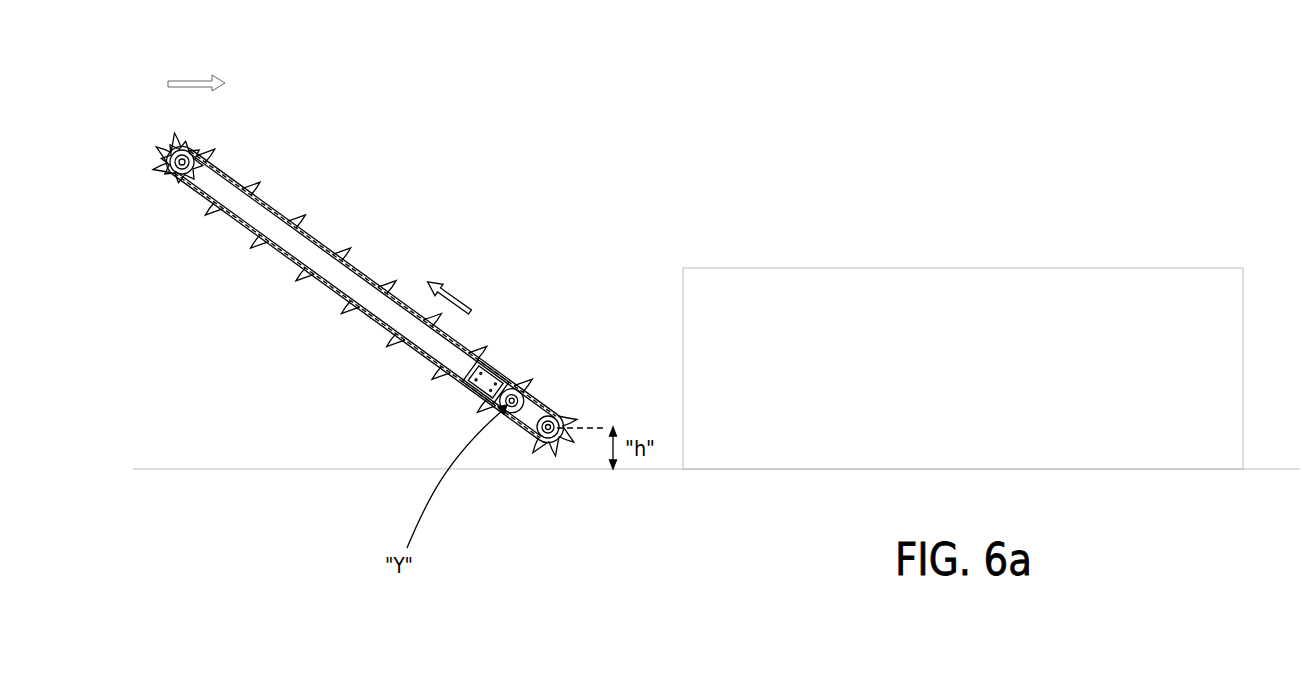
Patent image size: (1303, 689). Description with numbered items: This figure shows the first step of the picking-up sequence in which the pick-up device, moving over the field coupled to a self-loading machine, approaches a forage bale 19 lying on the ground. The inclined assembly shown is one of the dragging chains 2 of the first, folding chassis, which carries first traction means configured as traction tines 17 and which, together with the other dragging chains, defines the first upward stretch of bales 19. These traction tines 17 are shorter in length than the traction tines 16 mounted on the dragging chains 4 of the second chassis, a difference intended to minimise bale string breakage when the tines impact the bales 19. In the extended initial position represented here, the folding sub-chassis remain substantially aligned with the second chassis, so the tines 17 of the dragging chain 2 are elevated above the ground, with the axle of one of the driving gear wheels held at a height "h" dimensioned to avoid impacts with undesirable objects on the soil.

The dragging chain 2 is at (380, 309).
The dragging chain 4 is at (287, 253).
The traction tine 16 is at (290, 216).
The traction tine 17 is at (565, 415).
The bale 19 is at (1183, 292).